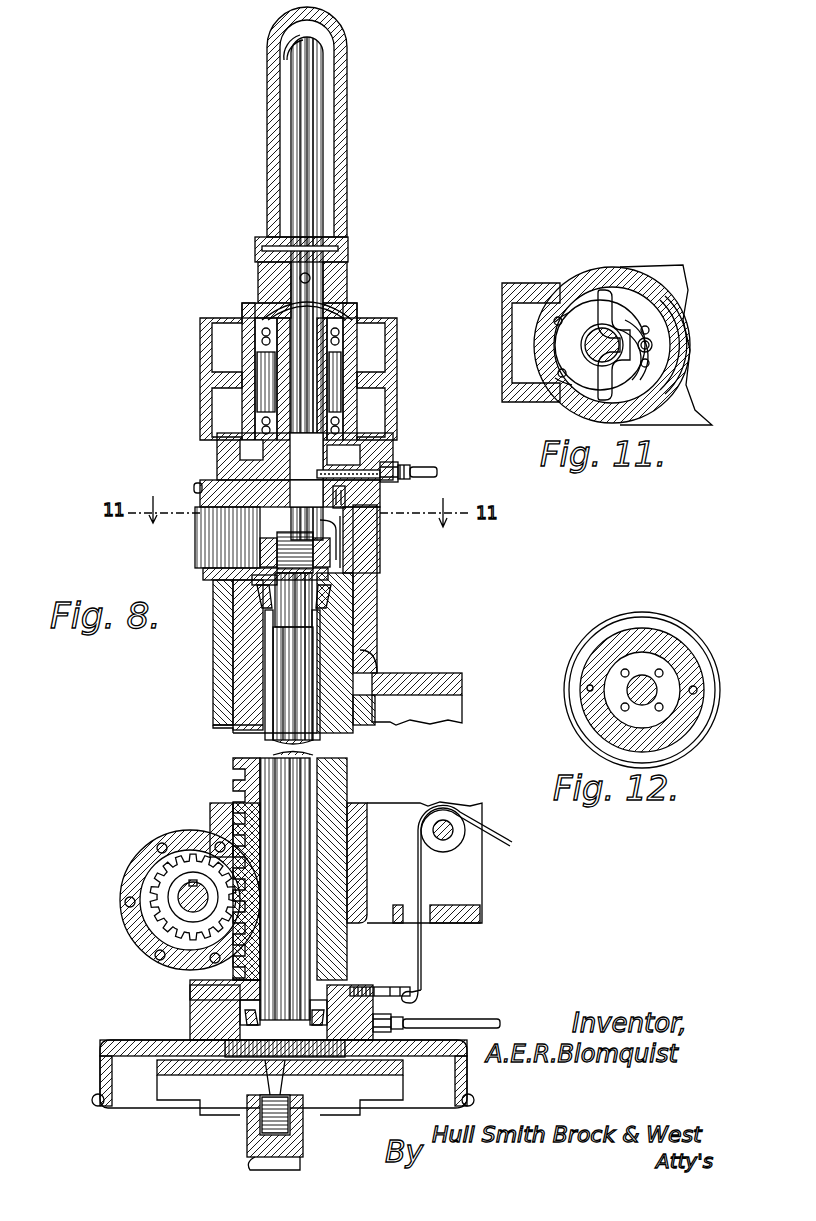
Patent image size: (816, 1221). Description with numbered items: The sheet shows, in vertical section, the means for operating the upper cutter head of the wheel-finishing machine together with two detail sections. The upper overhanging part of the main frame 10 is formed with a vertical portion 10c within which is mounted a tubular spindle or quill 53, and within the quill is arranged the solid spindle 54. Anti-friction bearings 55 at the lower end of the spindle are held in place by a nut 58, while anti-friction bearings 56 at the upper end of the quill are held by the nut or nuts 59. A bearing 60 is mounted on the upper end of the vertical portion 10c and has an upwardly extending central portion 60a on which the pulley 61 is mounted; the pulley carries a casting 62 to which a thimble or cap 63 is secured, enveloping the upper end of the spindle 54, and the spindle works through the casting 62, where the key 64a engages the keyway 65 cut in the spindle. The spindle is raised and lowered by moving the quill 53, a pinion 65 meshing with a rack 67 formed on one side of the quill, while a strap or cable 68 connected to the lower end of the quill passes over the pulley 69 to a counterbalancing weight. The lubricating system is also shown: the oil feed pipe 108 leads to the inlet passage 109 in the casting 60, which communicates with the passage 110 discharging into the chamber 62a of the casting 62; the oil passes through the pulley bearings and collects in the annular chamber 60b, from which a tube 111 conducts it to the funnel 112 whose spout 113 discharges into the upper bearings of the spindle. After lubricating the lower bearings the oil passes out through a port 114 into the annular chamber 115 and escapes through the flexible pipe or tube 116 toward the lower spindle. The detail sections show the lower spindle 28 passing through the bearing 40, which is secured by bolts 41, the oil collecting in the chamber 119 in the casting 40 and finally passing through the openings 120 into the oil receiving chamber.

In FIG. 8, the keyway / pinion 65 is at (306, 115).
In FIG. 8, the thimble or cap 63 is at (341, 196).
In FIG. 8, the flange of bearing cap 64a is at (346, 258).
In FIG. 8, the casting 62 is at (348, 284).
In FIG. 8, the chamber of casting 62a is at (356, 300).
In FIG. 8, the passage 110 is at (330, 398).
In FIG. 8, the upwardly extending central portion of bearing 60a is at (272, 380).
In FIG. 8, the annular chamber of bearing 60b is at (386, 436).
In FIG. 8, the bearing 60 is at (230, 450).
In FIG. 8, the inlet passage 109 is at (383, 462).
In FIG. 8, the oil feed pipe 108 is at (437, 470).
In FIG. 8, the tube 111 is at (346, 504).
In FIG. 11, the tube 111 is at (652, 345).
In FIG. 8, the funnel 112 is at (343, 527).
In FIG. 11, the funnel 112 is at (630, 378).
In FIG. 8, the nut or nuts 59 is at (347, 548).
In FIG. 11, the nut or nuts 59 is at (580, 352).
In FIG. 8, the spout 113 is at (349, 568).
In FIG. 8, the anti-friction bearings 56 is at (333, 592).
In FIG. 8, the annular chamber 115 is at (326, 660).
In FIG. 8, the main frame 10 is at (432, 690).
In FIG. 8, the solid spindle 54 is at (298, 648).
In FIG. 11, the solid spindle 54 is at (595, 343).
In FIG. 8, the tubular spindle or quill 53 is at (246, 690).
In FIG. 8, the vertical portion of main frame 10c is at (358, 722).
In FIG. 11, the vertical portion of main frame 10c is at (650, 285).
In FIG. 8, the rack 67 is at (234, 772).
In FIG. 8, the pulley 69 is at (455, 840).
In FIG. 8, the strap or cable 68 is at (422, 900).
In FIG. 8, the port 114 is at (356, 985).
In FIG. 8, the anti-friction bearings 55 is at (196, 1014).
In FIG. 8, the flexible pipe or tube 116 is at (456, 1025).
In FIG. 8, the pulley 61 is at (122, 1070).
In FIG. 8, the nut 58 is at (254, 1066).
In FIG. 12, the spindle 28 is at (652, 680).
In FIG. 12, the bolts 41 is at (694, 690).
In FIG. 12, the openings 120 is at (622, 707).
In FIG. 12, the chamber 119 is at (637, 713).
In FIG. 12, the bearing 40 is at (692, 726).